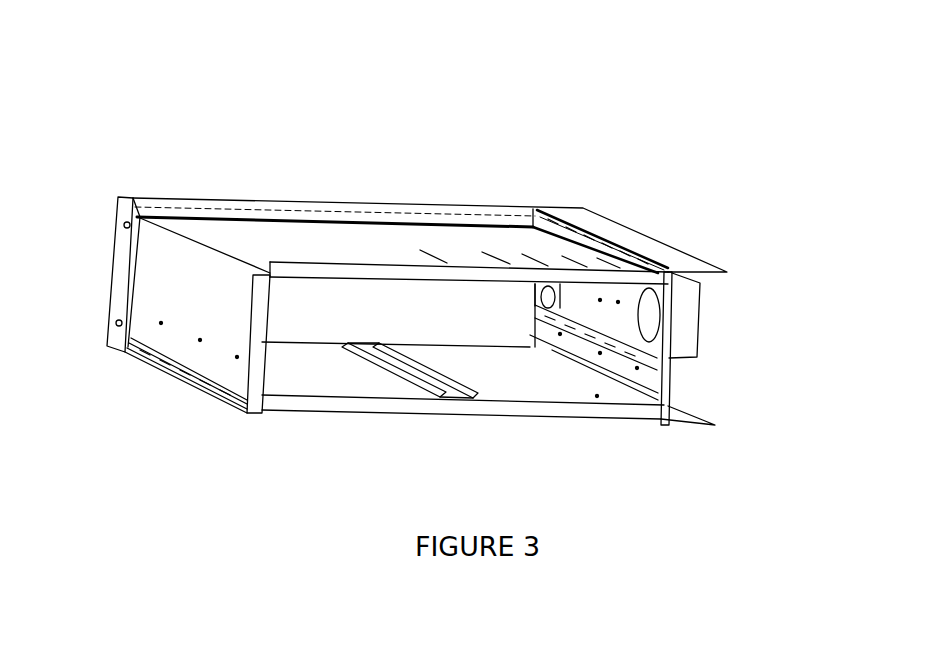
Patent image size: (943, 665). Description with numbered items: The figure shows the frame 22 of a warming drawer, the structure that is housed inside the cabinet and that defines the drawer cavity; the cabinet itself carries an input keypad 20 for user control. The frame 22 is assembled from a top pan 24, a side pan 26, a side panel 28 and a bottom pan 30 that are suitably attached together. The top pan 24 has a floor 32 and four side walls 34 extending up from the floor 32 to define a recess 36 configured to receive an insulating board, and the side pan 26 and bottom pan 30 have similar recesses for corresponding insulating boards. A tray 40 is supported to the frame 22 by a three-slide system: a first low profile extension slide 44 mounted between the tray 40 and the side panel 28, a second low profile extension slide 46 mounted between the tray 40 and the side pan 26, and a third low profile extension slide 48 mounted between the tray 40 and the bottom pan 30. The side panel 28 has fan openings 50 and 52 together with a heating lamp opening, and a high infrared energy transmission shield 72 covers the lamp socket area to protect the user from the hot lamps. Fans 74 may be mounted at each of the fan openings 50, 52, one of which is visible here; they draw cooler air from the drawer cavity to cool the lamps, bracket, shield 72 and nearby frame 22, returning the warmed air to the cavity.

The input keypad 20 is at (722, 408).
The frame 22 is at (438, 110).
The top pan 24 is at (336, 200).
The side pan 26 is at (110, 287).
The side panel 28 is at (691, 252).
The bottom pan 30 is at (641, 431).
The floor 32 is at (483, 218).
The side walls 34 is at (271, 194).
The recess 36 is at (194, 191).
The tray 40 is at (310, 418).
The first low profile extension slide 44 is at (683, 365).
The second low profile extension slide 46 is at (280, 348).
The third low profile extension slide 48 is at (424, 398).
The fan opening 50 is at (634, 355).
The fan opening 52 is at (531, 307).
The high infrared energy transmission shield 72 is at (591, 311).
The fan 74 is at (712, 304).